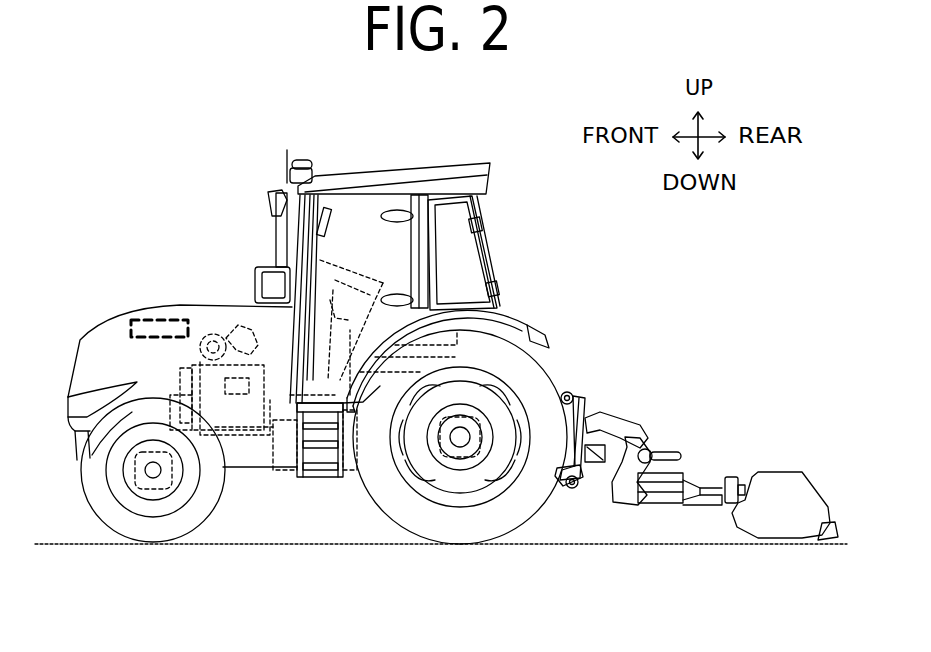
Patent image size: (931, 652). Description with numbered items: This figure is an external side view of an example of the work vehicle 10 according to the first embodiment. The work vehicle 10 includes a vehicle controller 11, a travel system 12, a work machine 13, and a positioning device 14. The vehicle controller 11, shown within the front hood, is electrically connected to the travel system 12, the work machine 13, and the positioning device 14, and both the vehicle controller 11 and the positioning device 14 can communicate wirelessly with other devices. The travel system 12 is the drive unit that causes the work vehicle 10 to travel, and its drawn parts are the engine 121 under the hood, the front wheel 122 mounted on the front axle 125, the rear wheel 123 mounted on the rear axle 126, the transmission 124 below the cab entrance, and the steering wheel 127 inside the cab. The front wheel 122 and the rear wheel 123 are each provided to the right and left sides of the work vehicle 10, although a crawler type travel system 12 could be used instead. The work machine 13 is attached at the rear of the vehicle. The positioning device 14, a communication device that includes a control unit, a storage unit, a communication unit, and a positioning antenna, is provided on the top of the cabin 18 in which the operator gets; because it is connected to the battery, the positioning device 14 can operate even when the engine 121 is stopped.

The work vehicle 10 is at (142, 184).
The vehicle controller 11 is at (148, 315).
The travel system 12 is at (72, 490).
The work machine 13 is at (716, 428).
The positioning device 14 is at (292, 142).
The cabin 18 is at (507, 250).
The engine 121 is at (222, 318).
The front wheel 122 is at (194, 524).
The rear wheel 123 is at (413, 524).
The transmission 124 is at (327, 480).
The front axle 125 is at (150, 490).
The rear axle 126 is at (458, 452).
The steering wheel 127 is at (377, 298).